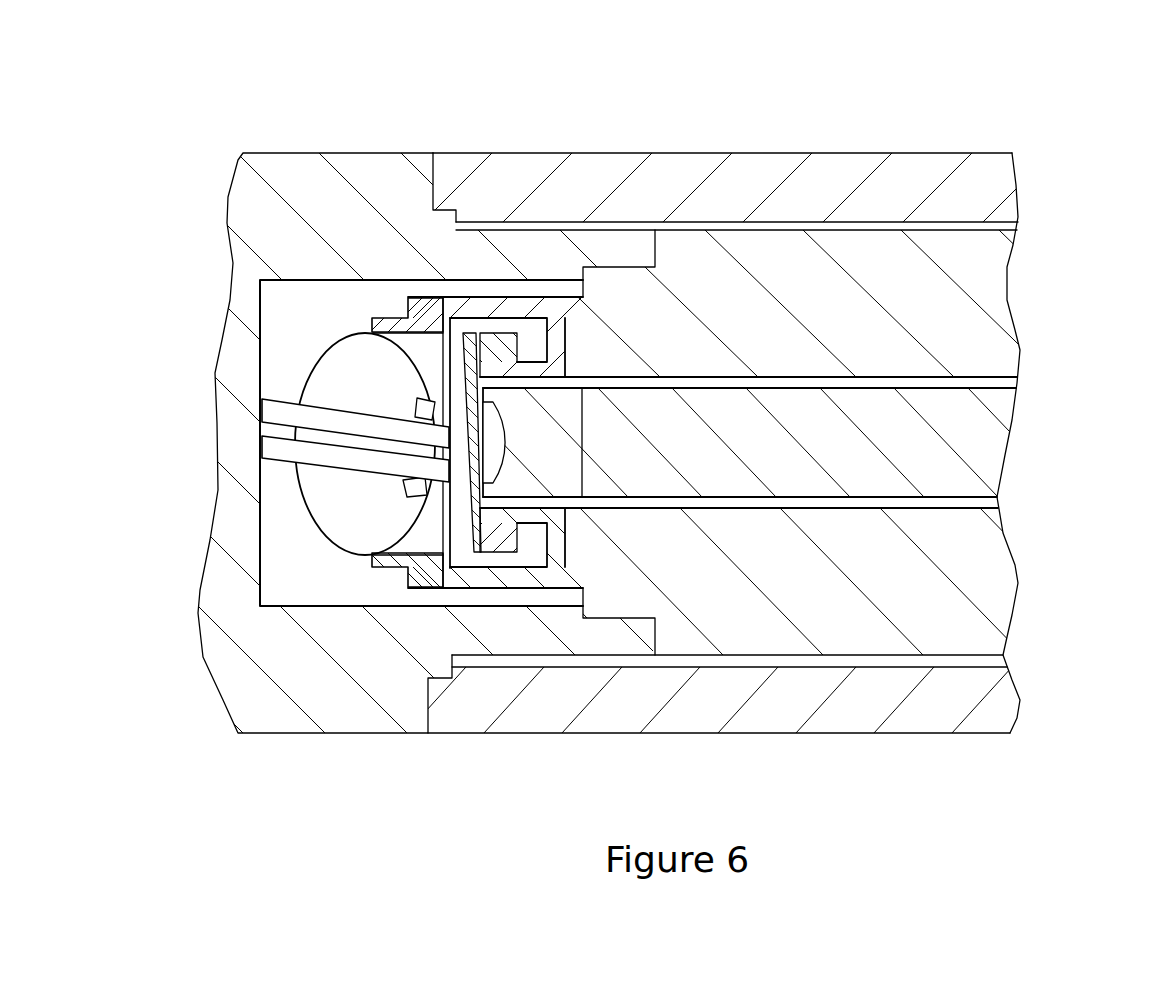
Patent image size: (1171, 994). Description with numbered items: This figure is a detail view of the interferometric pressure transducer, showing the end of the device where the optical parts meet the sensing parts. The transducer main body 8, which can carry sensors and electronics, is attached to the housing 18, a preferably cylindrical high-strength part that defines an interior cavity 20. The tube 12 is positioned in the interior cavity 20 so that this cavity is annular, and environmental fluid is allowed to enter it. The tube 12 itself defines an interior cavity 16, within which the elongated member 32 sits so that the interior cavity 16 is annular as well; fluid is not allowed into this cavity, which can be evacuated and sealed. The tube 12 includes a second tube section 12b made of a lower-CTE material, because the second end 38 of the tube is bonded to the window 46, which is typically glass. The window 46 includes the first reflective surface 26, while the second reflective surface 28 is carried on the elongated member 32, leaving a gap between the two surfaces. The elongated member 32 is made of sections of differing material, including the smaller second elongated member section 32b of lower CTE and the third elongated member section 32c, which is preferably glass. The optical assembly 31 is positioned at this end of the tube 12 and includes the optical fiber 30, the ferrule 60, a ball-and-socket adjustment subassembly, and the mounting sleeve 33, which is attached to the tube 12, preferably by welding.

The transducer main body 8 is at (263, 180).
The tube 12 is at (975, 329).
The second tube section 12b is at (497, 548).
The interior cavity 16 is at (798, 387).
The housing 18 is at (927, 188).
The interior cavity 20 is at (867, 230).
The first reflective surface 26 is at (468, 460).
The second reflective surface 28 is at (484, 470).
The optical fiber 30 is at (366, 444).
The optical assembly 31 is at (347, 272).
The elongated member 32 is at (968, 451).
The second elongated member section 32b is at (572, 432).
The third elongated member section 32c is at (505, 447).
The mounting sleeve 33 is at (437, 312).
The second end 38 is at (579, 343).
The window 46 is at (476, 350).
The ferrule 60 is at (285, 455).